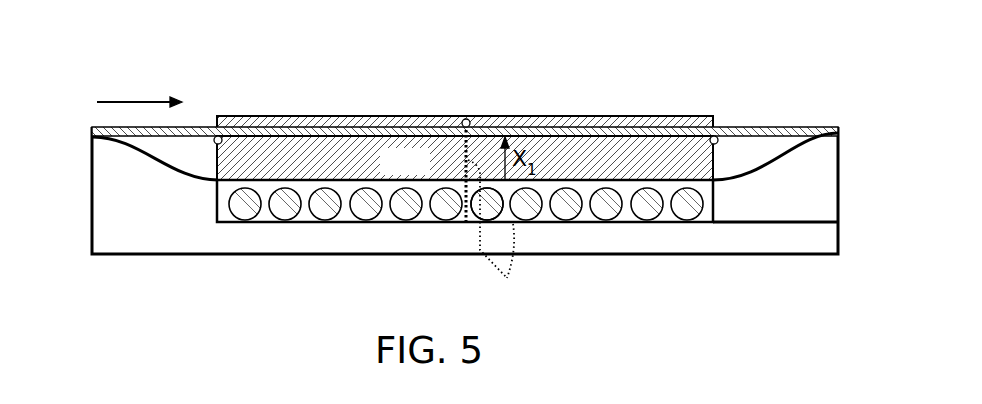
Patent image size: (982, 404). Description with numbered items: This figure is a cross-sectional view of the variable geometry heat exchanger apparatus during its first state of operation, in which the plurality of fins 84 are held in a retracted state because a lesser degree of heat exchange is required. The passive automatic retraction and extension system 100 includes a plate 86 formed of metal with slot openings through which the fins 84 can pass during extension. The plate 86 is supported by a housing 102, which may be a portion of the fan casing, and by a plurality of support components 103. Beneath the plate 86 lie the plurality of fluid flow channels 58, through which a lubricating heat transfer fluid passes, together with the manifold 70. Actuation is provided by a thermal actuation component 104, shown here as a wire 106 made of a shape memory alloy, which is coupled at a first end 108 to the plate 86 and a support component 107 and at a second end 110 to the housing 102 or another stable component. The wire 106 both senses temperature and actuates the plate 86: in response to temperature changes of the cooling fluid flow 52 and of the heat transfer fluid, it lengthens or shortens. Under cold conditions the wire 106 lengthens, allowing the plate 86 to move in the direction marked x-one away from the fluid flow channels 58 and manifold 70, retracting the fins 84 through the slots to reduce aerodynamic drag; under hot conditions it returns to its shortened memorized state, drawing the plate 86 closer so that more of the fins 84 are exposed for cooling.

The cooling fluid flow 52 is at (140, 100).
The fluid flow channels 58 is at (388, 223).
The manifold 70 is at (267, 225).
The fins 84 is at (617, 116).
The plate 86 is at (788, 127).
The passive automatic retraction and extension system 100 is at (556, 236).
The housing 102 is at (148, 256).
The support components 103 is at (214, 140).
The thermal actuation component 104 is at (500, 234).
The wire 106 is at (510, 251).
The support component 107 is at (466, 118).
The first end 108 is at (465, 158).
The second end 110 is at (707, 223).